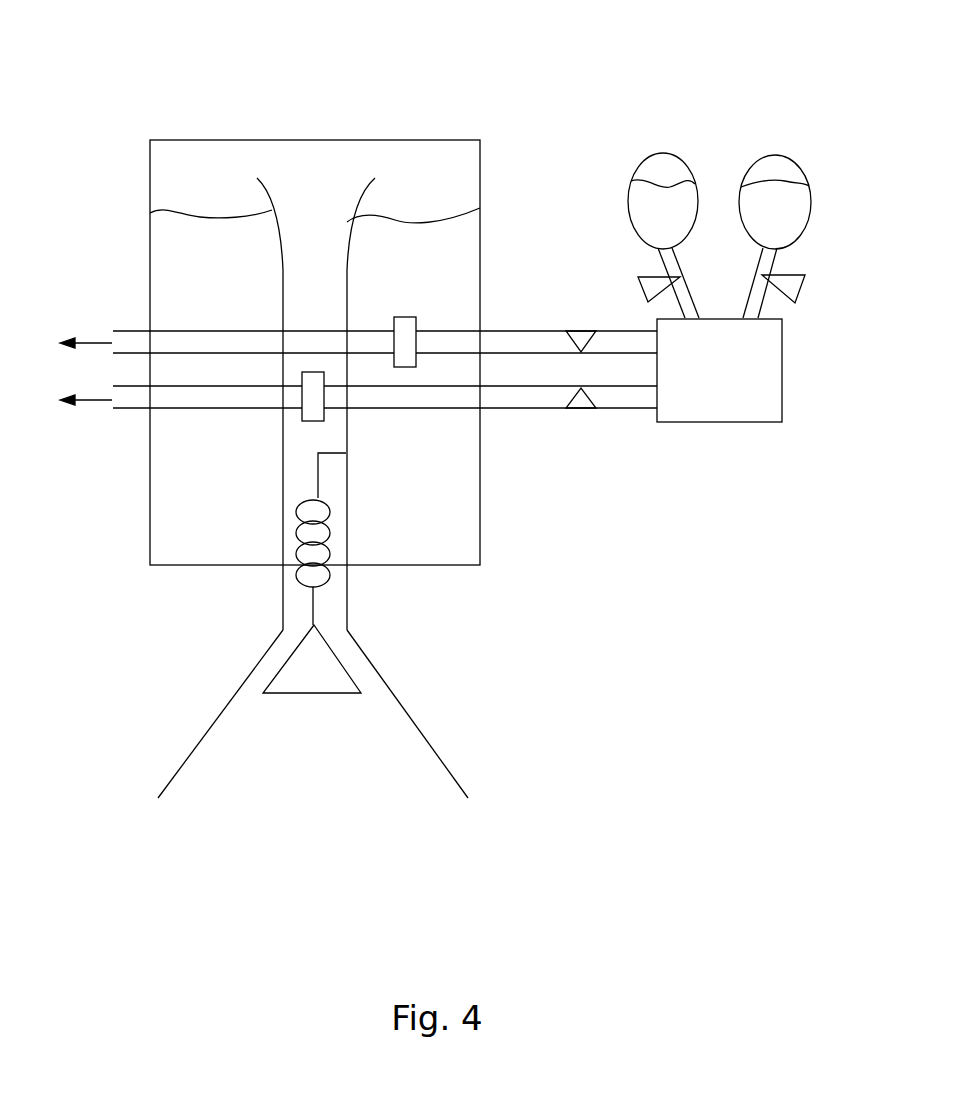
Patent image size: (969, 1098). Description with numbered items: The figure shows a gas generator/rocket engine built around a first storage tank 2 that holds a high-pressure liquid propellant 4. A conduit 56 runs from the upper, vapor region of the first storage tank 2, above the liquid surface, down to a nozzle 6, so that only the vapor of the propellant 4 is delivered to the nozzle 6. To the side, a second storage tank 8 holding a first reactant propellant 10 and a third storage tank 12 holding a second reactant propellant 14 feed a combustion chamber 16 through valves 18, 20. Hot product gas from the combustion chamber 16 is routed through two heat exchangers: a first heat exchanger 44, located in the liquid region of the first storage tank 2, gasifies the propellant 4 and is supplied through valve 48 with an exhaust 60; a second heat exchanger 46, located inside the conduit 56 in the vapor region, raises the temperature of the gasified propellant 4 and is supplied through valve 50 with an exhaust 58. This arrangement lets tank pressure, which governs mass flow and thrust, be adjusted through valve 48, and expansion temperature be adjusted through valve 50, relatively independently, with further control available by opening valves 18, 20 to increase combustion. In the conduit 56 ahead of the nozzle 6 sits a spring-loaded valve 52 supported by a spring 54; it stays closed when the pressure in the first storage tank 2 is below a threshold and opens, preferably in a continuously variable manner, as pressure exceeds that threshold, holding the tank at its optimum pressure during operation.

The first storage tank 2 is at (210, 140).
The high-pressure liquid propellant 4 is at (168, 275).
The nozzle 6 is at (407, 705).
The second storage tank 8 is at (800, 160).
The first reactant propellant 10 is at (782, 217).
The third storage tank 12 is at (685, 162).
The second reactant propellant 14 is at (671, 215).
The combustion chamber 16 is at (719, 370).
The valve 18 is at (802, 290).
The valve 20 is at (638, 277).
The first heat exchanger 44 is at (415, 317).
The second heat exchanger 46 is at (302, 421).
The valve 48 is at (575, 318).
The valve 50 is at (582, 423).
The spring-loaded valve 52 is at (323, 695).
The spring 54 is at (323, 508).
The conduit 56 is at (283, 276).
The exhaust 58 is at (137, 407).
The exhaust 60 is at (136, 329).